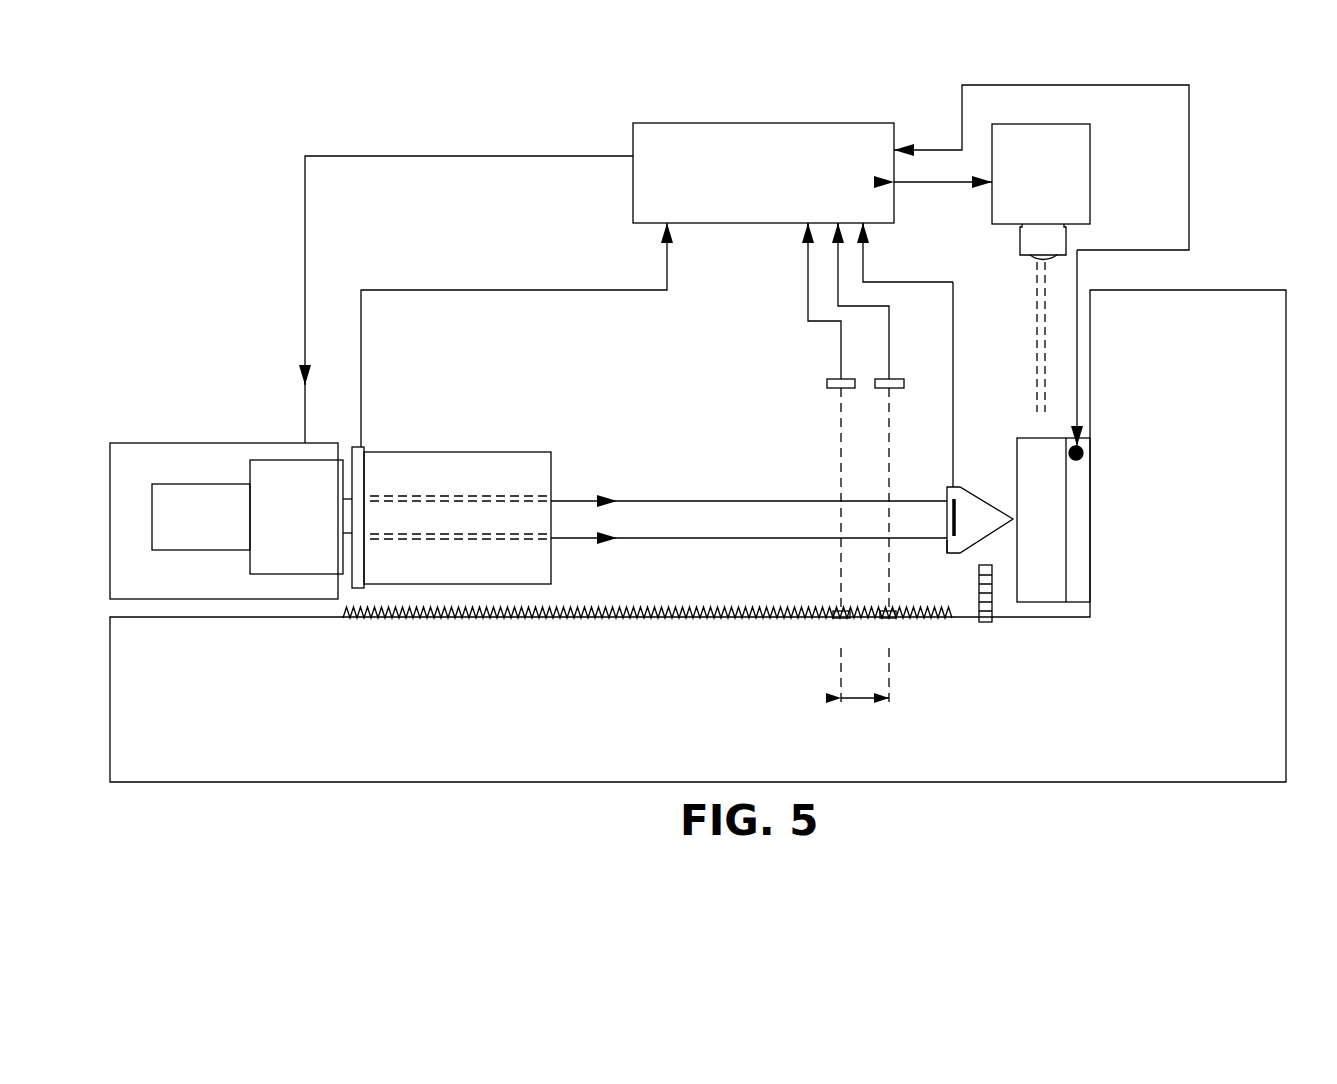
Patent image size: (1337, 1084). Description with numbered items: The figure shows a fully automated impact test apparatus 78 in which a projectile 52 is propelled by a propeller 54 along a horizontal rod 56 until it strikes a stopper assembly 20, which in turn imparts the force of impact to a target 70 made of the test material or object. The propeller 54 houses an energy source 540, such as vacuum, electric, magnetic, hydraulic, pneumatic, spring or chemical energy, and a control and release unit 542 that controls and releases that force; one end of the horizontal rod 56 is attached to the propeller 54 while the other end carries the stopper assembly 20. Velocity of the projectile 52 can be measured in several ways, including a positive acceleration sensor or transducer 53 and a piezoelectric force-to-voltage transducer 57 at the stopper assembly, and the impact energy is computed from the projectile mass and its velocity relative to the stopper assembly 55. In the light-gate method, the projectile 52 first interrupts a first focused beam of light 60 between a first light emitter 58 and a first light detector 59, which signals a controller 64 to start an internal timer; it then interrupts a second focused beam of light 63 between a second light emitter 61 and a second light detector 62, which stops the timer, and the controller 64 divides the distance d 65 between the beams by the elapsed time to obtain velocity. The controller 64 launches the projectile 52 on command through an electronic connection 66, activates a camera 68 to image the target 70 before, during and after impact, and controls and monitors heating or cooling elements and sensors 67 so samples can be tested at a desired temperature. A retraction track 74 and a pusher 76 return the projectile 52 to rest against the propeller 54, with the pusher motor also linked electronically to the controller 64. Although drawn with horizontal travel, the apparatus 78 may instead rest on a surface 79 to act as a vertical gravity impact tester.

The stopper assembly 20 is at (982, 520).
The projectile 52 is at (500, 458).
The positive acceleration sensor or transducer 53 is at (366, 447).
The propeller 54 is at (203, 442).
The energy source 540 is at (183, 490).
The control and release unit 542 is at (292, 460).
The stopper assembly 55 is at (957, 559).
The horizontal rod 56 is at (705, 500).
The piezoelectric force-to-voltage transducer 57 is at (950, 500).
The first light emitter 58 is at (838, 619).
The first light detector 59 is at (828, 386).
The first focused beam of light 60 is at (838, 550).
The second light emitter 61 is at (888, 619).
The second light detector 62 is at (895, 379).
The second focused beam of light 63 is at (890, 553).
The controller 64 is at (828, 123).
The distance d 65 is at (876, 705).
The electronic connection 66 is at (458, 156).
The heating or cooling elements and sensors 67 is at (1080, 447).
The camera 68 is at (1090, 160).
The target 70 is at (1055, 596).
The retraction track 74 is at (580, 608).
The pusher 76 is at (993, 623).
The apparatus 78 is at (224, 152).
The surface 79 is at (1291, 666).